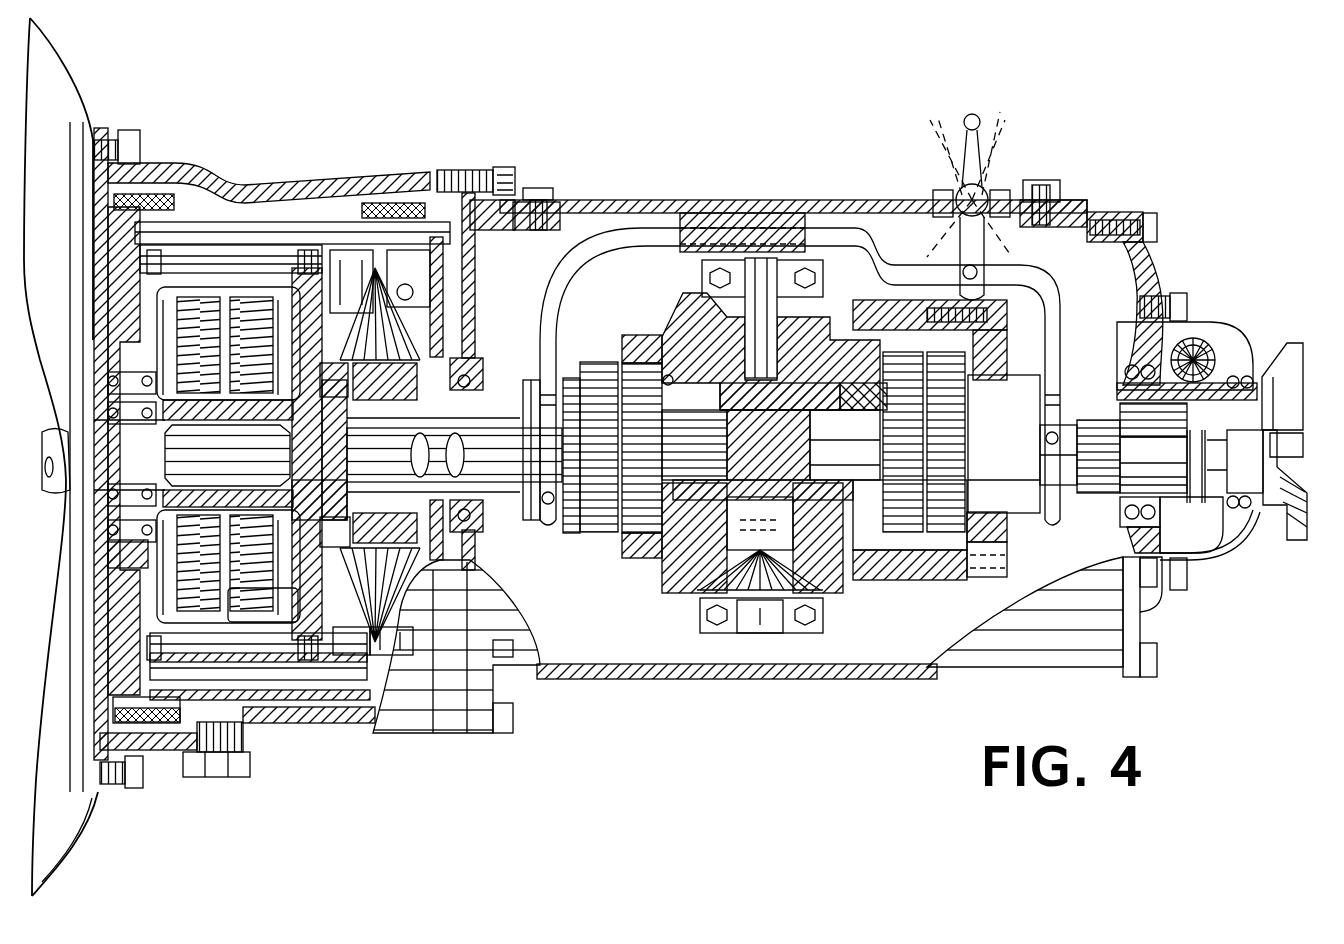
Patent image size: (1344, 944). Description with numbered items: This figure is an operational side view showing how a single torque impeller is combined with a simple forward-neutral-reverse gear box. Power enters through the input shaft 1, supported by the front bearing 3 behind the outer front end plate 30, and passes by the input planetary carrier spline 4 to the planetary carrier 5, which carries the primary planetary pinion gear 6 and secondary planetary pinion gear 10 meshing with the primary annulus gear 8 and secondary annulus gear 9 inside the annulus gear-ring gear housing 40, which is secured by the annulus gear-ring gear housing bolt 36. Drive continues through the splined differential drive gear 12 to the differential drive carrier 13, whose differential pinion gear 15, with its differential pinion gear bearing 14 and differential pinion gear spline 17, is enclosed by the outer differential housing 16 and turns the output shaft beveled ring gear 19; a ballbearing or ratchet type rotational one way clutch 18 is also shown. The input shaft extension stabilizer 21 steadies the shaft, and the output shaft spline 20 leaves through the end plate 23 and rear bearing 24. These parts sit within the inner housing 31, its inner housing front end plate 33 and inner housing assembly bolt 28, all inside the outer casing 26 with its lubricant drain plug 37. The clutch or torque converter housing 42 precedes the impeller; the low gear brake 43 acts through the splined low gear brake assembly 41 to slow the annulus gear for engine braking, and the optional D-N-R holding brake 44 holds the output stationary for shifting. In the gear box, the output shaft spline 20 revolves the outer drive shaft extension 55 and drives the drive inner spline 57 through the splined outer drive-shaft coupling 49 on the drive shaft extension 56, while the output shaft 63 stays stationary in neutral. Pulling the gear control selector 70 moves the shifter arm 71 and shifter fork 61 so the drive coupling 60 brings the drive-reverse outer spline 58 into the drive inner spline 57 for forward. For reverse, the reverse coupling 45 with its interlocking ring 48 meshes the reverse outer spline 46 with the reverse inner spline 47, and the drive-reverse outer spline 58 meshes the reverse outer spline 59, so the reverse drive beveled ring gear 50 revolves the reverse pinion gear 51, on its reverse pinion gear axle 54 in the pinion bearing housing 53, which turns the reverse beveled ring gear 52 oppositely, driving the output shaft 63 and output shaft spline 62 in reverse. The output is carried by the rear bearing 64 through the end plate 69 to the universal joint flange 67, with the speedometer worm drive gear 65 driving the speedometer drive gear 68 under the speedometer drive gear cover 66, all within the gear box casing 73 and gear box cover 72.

The input shaft 1 is at (60, 478).
The front bearing 3 is at (108, 514).
The input planetary carrier spline 4 is at (172, 430).
The planetary carrier 5 is at (280, 500).
The primary planetary pinion gear 6 is at (233, 585).
The primary annulus gear 8 is at (228, 335).
The secondary annulus gear 9 is at (258, 580).
The secondary planetary pinion gear 10 is at (263, 605).
The splined differential drive gear 12 is at (319, 454).
The differential drive carrier 13 is at (385, 524).
The differential pinion gear bearing 14 is at (370, 525).
The differential pinion gear 15 is at (368, 381).
The outer differential housing 16 is at (380, 283).
The differential pinion gear spline 17 is at (408, 278).
The ballbearing or ratchet type rotational one way clutch 18 is at (376, 601).
The output shaft beveled ring gear 19 is at (412, 300).
The output shaft spline 20 is at (522, 495).
The input shaft extension stabilizer 21 is at (446, 455).
The end plate 23 is at (476, 297).
The rear bearing 24 is at (470, 381).
The outer casing 26 is at (415, 715).
The inner housing assembly bolt 28 is at (470, 240).
The outer front end plate 30 is at (94, 228).
The inner housing 31 is at (320, 248).
The inner housing front end plate 33 is at (136, 283).
The annulus gear-ring gear housing bolt 36 is at (265, 248).
The lubricant drain plug 37 is at (250, 768).
The annulus gear-ring gear housing 40 is at (248, 250).
The splined low gear brake assembly 41 is at (108, 546).
The clutch or torque converter housing 42 is at (82, 405).
The low gear brake 43 is at (143, 194).
The D-N-R holding brake 44 is at (380, 203).
The reverse coupling 45 is at (555, 515).
The reverse outer spline 46 is at (596, 533).
The reverse inner spline 47 is at (665, 372).
The interlocking ring 48 is at (676, 370).
The splined outer drive-shaft coupling 49 is at (736, 445).
The reverse drive beveled ring gear 50 is at (690, 588).
The reverse pinion gear 51 is at (700, 608).
The reverse beveled ring gear 52 is at (830, 590).
The pinion bearing housing 53 is at (702, 280).
The reverse pinion gear axle 54 is at (790, 360).
The outer drive shaft extension 55 is at (780, 397).
The drive shaft extension 56 is at (845, 444).
The drive inner spline 57 is at (863, 397).
The drive-reverse outer spline 58 is at (945, 428).
The reverse outer spline 59 is at (1008, 520).
The drive coupling 60 is at (1022, 453).
The shifter fork 61 is at (1062, 372).
The output shaft spline 62 is at (1166, 461).
The output shaft 63 is at (1258, 453).
The rear bearing 64 is at (1124, 510).
The speedometer worm drive gear 65 is at (1195, 505).
The speedometer drive gear cover 66 is at (1235, 548).
The universal joint flange 67 is at (1283, 395).
The speedometer drive gear 68 is at (1187, 361).
The end plate 69 is at (1150, 268).
The gear control selector 70 is at (984, 170).
The shifter arm 71 is at (1048, 290).
The gear box cover 72 is at (795, 212).
The gear box casing 73 is at (1095, 670).